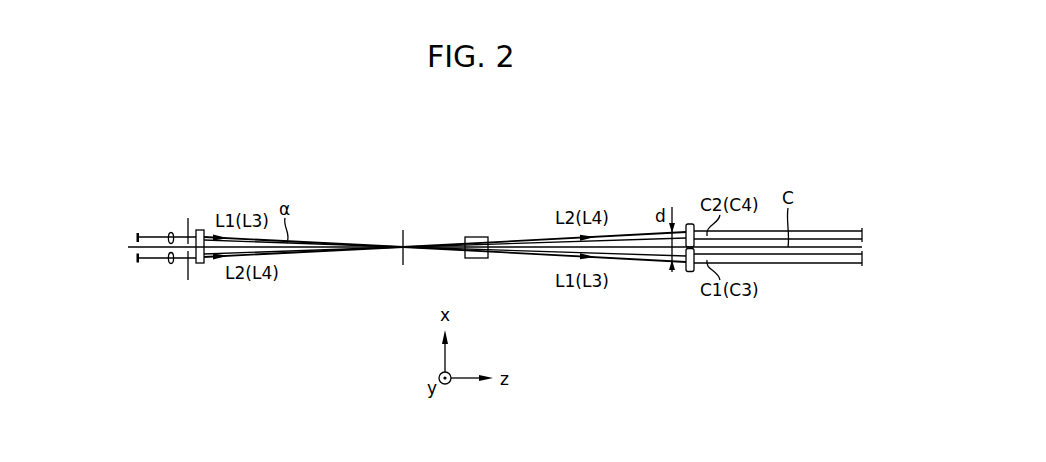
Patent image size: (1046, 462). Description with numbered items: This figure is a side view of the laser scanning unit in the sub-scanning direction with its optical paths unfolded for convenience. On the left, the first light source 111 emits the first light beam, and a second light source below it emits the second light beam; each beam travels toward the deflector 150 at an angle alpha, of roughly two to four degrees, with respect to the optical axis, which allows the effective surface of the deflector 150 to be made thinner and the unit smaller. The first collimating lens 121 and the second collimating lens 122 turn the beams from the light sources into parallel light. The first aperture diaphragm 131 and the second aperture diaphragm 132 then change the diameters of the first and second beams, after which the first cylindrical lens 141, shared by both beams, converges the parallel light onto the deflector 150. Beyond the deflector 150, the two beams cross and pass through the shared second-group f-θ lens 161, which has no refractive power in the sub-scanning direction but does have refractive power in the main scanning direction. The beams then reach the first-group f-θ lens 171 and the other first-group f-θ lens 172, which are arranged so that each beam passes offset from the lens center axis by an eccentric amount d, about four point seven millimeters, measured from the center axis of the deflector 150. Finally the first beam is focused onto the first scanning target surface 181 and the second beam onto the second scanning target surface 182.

The first light source 111 is at (138, 233).
The first collimating lens 121 is at (172, 231).
The first aperture diaphragm 131 is at (188, 218).
The first cylindrical lens 141 is at (200, 230).
The second collimating lens 122 is at (138, 263).
The second aperture diaphragm 132 is at (189, 281).
The deflector 150 is at (403, 230).
The 2-1 f-θ lens 161 is at (478, 237).
The 1-1 f-θ lens 171 is at (690, 272).
The 1-2 f-θ lens 172 is at (690, 224).
The first scanning target surface 181 is at (862, 265).
The second scanning target surface 182 is at (862, 230).